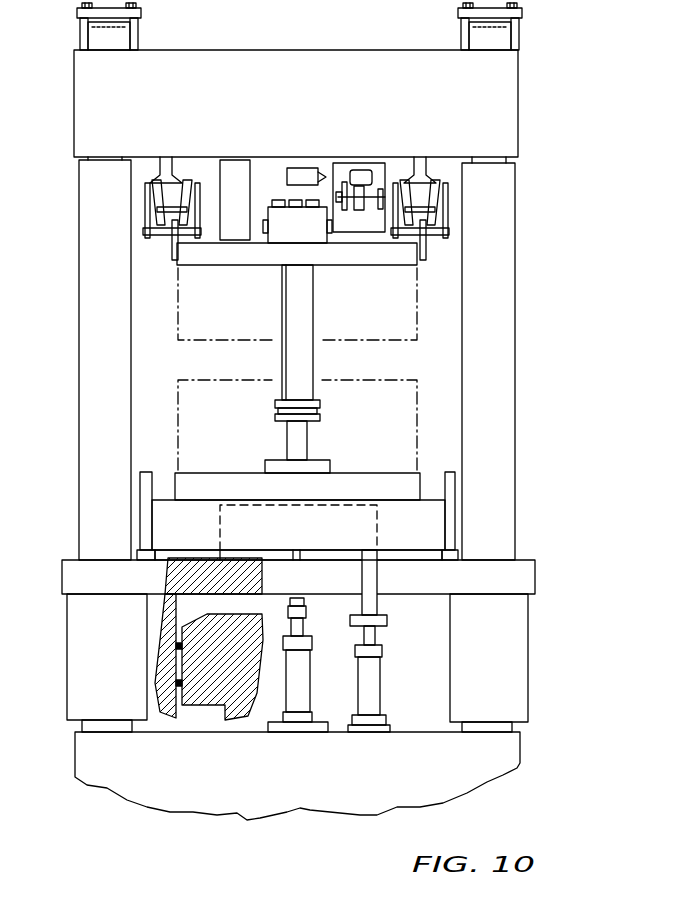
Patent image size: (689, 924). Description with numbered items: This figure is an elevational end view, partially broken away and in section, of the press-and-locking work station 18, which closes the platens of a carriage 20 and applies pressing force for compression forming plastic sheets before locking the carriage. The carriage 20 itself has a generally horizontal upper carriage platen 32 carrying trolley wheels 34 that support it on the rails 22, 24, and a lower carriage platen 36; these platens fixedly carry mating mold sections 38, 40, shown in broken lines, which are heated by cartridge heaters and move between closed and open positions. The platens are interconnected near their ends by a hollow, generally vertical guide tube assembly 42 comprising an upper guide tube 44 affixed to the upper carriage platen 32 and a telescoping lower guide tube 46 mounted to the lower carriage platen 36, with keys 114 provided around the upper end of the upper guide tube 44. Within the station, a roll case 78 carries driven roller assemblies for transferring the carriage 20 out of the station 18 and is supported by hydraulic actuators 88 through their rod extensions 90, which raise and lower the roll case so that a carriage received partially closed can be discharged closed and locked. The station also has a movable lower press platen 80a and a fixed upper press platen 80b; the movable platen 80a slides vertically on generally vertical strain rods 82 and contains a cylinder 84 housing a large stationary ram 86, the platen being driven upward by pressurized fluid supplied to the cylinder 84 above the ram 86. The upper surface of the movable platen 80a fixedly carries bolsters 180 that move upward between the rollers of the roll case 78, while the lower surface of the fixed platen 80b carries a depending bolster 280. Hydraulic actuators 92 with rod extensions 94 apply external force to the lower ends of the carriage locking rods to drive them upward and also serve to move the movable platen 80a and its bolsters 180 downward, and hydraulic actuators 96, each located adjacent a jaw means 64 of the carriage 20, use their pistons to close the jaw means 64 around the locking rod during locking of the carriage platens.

The work station 18 is at (557, 290).
The carriage 20 is at (299, 194).
The rail 22 is at (422, 172).
The rail 24 is at (170, 172).
The upper carriage platen 32 is at (262, 262).
The trolley wheels 34 is at (160, 196).
The lower carriage platen 36 is at (360, 485).
The mold section 38 is at (185, 300).
The mold section 40 is at (190, 443).
The guide tube assembly 42 is at (308, 343).
The upper guide tube 44 is at (290, 368).
The lower guide tube 46 is at (293, 432).
The jaw means 64 is at (322, 196).
The roll case 78 is at (157, 522).
The movable press platen 80a is at (402, 597).
The fixed press platen 80b is at (365, 70).
The strain rods 82 is at (88, 414).
The cylinder 84 is at (178, 614).
The ram 86 is at (210, 690).
The hydraulic actuator 88 is at (384, 695).
The rod extension 90 is at (373, 578).
The hydraulic actuator 92 is at (282, 692).
The rod extension 94 is at (301, 550).
The hydraulic actuator 96 is at (373, 207).
The keys 114 is at (330, 266).
The bolster 180 is at (384, 528).
The depending bolster 280 is at (222, 165).